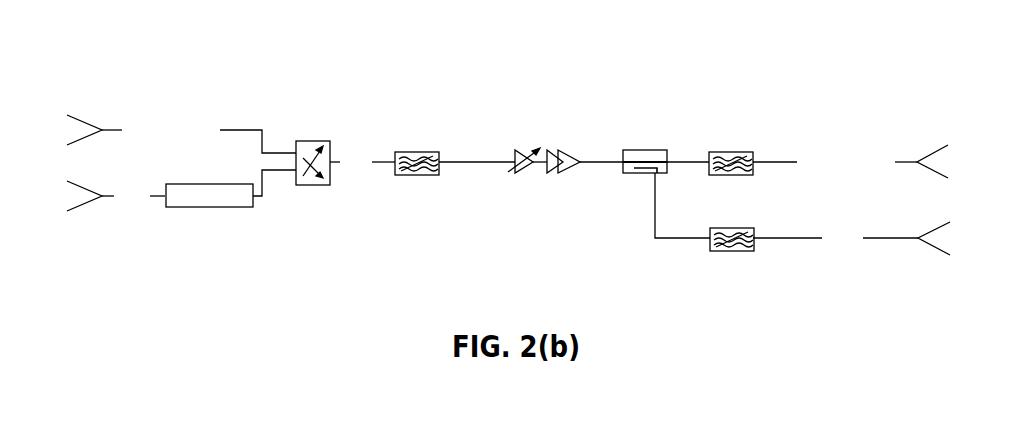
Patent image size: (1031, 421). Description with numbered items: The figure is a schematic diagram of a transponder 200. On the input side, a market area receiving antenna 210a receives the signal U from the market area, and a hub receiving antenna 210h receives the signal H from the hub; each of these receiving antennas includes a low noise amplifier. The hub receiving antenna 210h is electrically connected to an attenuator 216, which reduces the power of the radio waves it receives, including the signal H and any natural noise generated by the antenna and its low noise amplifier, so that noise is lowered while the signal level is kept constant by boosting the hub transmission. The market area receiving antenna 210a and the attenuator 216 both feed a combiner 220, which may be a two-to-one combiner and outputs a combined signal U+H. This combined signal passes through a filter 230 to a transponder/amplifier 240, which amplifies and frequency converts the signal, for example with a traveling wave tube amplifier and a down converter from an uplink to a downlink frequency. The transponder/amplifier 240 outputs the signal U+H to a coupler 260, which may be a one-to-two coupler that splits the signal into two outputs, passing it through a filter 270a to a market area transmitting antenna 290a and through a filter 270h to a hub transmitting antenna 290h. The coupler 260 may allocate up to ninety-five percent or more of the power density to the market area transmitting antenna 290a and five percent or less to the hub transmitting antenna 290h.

The transponder 200 is at (972, 73).
The market area receiving antenna 210a is at (134, 111).
The hub receiving antenna 210h is at (100, 214).
The attenuator 216 is at (210, 207).
The combiner 220 is at (313, 146).
The filter 230 is at (417, 146).
The transponder/amplifier 240 is at (544, 145).
The coupler 260 is at (645, 145).
The filter 270a is at (731, 142).
The filter 270h is at (732, 263).
The market area transmitting antenna 290a is at (949, 144).
The hub transmitting antenna 290h is at (950, 260).